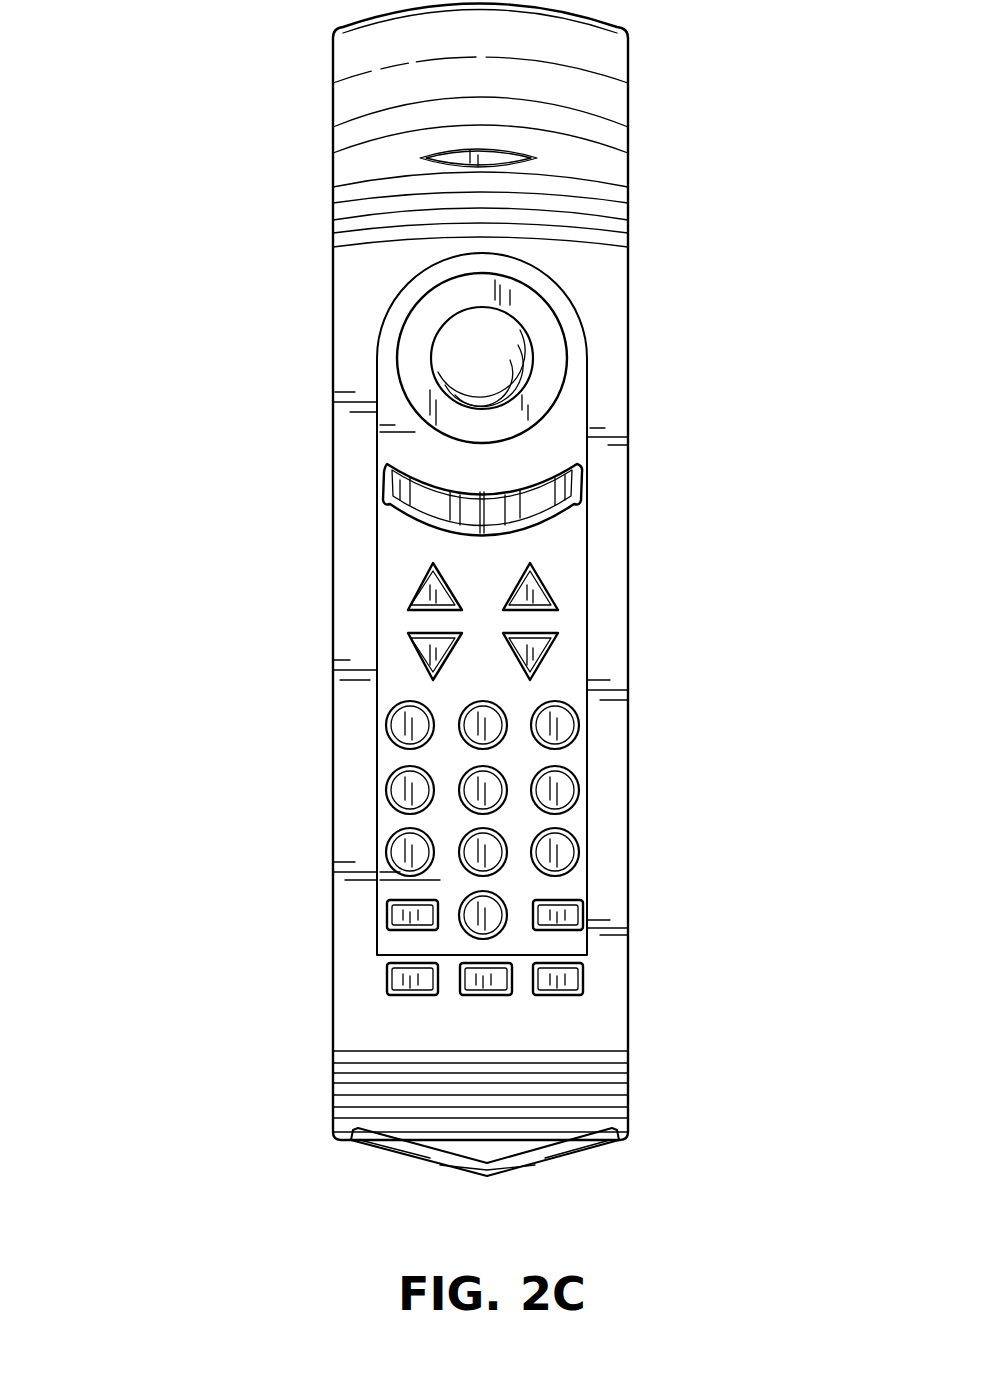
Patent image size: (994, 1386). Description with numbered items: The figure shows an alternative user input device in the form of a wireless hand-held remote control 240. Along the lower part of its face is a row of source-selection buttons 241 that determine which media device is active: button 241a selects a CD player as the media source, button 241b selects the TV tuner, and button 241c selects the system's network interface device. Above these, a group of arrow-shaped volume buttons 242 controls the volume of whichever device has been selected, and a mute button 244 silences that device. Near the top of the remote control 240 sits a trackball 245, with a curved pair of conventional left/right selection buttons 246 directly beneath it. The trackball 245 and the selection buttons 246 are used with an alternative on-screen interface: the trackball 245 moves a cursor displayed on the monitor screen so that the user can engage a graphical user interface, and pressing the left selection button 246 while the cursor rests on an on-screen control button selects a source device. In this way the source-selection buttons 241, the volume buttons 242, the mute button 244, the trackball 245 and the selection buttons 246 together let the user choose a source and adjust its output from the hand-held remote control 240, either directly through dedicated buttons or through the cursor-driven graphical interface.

The wireless hand-held remote control 240 is at (692, 421).
The source-selection buttons 241 is at (414, 1008).
The CD player selection button 241a is at (583, 974).
The TV tuner selection button 241b is at (387, 978).
The network interface selection button 241c is at (463, 979).
The volume buttons 242 is at (420, 593).
The mute button 244 is at (387, 917).
The trackball 245 is at (462, 340).
The left/right selection buttons 246 is at (528, 500).